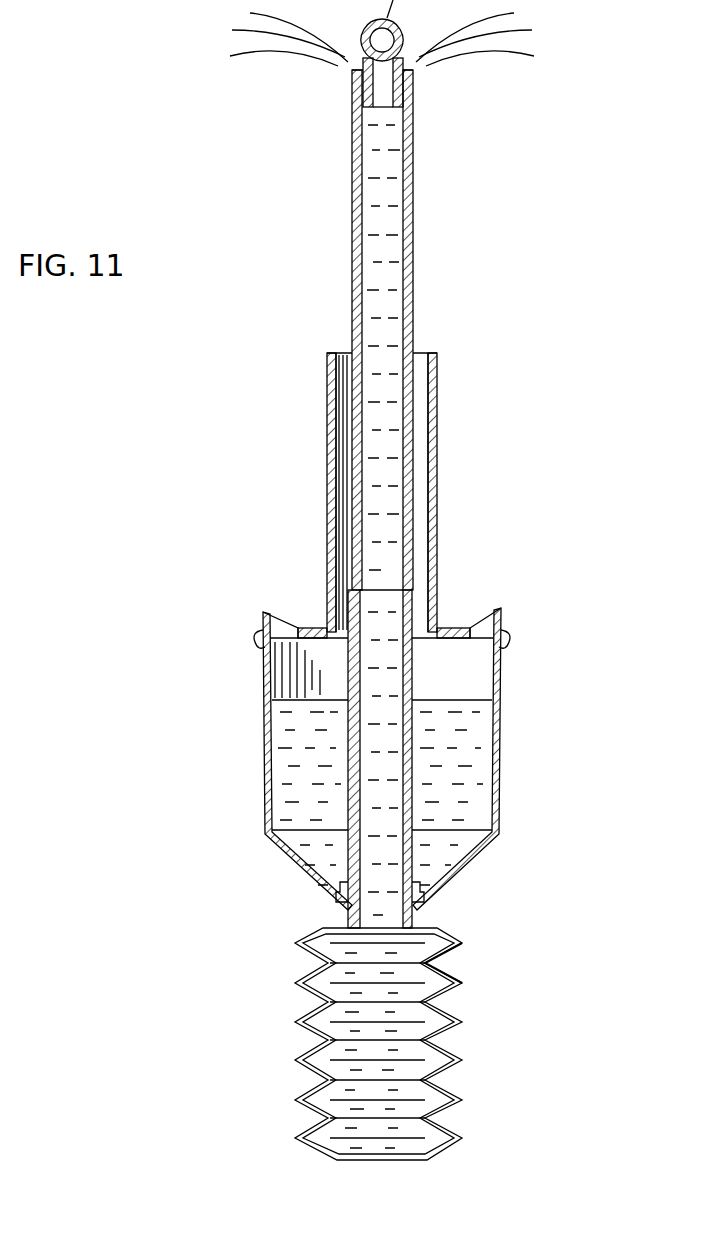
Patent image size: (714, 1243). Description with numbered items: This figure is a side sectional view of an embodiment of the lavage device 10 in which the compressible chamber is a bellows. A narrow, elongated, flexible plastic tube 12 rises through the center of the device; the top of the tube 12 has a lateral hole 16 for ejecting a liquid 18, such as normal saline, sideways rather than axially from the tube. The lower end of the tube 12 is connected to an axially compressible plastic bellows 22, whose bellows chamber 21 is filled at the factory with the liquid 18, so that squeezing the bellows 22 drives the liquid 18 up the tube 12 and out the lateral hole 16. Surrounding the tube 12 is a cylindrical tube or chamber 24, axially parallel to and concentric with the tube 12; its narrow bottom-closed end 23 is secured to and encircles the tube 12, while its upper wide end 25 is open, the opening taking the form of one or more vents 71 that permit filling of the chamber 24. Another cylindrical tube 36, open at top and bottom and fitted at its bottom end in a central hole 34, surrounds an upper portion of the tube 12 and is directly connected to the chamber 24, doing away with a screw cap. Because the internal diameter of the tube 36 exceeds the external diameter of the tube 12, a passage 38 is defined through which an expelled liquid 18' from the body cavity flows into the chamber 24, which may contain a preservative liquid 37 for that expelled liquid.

The lavage device 10 is at (490, 376).
The flexible plastic tube 12 is at (352, 181).
The lateral hole 16 is at (362, 76).
The liquid 18 is at (382, 538).
The expelled liquid 18' is at (246, 755).
The bellows chamber 21 is at (423, 1067).
The bellows 22 is at (450, 984).
The bottom-closed end 23 is at (340, 906).
The cylindrical tube or chamber 24 is at (502, 757).
The upper wide end 25 is at (453, 630).
The central hole 34 is at (410, 666).
The cylindrical tube 36 is at (327, 445).
The preservative liquid 37 is at (457, 852).
The passage 38 is at (417, 358).
The vent 71 is at (281, 624).